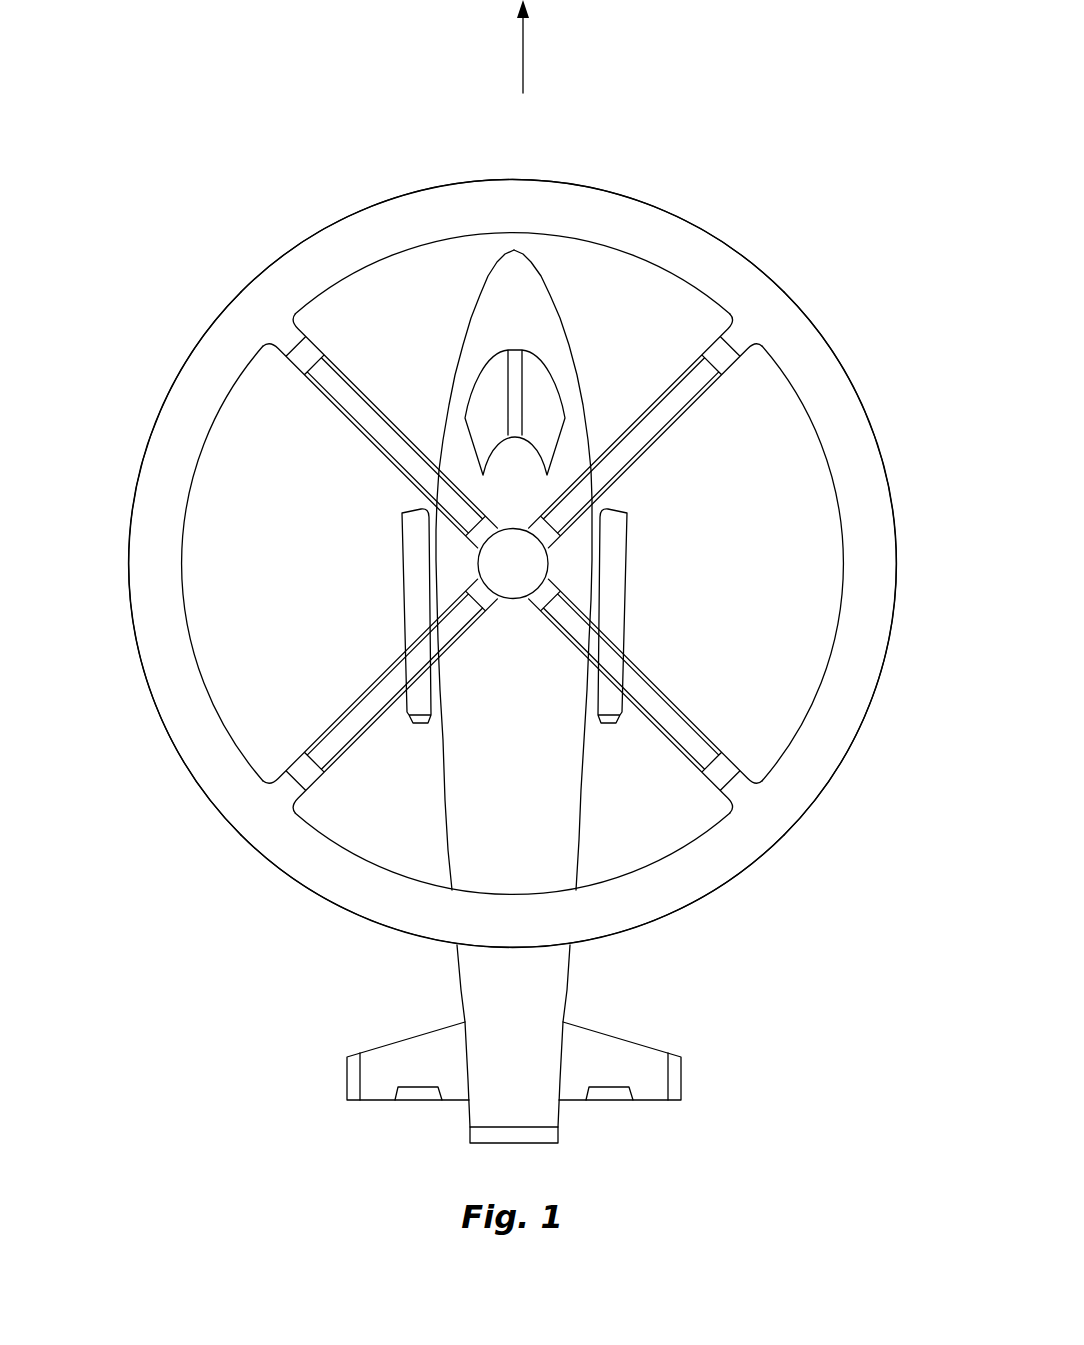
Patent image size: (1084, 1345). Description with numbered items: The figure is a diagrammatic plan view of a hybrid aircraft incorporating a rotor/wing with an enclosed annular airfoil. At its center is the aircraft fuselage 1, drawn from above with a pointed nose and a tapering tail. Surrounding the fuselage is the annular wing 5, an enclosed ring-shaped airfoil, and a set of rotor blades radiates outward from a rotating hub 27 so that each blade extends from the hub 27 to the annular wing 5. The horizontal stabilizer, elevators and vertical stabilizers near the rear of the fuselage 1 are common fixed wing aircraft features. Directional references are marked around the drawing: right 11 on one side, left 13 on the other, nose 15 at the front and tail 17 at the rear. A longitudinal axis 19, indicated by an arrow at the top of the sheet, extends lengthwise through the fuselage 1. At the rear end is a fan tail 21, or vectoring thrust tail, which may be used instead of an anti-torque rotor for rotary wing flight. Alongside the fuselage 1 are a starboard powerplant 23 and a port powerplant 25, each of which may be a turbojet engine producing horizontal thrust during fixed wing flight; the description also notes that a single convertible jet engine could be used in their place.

The aircraft fuselage 1 is at (437, 780).
The annular wing 5 is at (781, 284).
The right 11 is at (935, 551).
The left 13 is at (62, 545).
The nose 15 is at (543, 150).
The tail 17 is at (503, 1179).
The longitudinal axis 19 is at (524, 50).
The fan tail 21 is at (558, 1143).
The starboard powerplant 23 is at (627, 610).
The port powerplant 25 is at (398, 620).
The rotating hub 27 is at (533, 565).